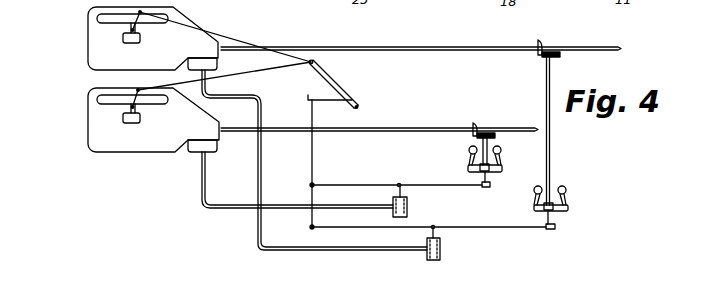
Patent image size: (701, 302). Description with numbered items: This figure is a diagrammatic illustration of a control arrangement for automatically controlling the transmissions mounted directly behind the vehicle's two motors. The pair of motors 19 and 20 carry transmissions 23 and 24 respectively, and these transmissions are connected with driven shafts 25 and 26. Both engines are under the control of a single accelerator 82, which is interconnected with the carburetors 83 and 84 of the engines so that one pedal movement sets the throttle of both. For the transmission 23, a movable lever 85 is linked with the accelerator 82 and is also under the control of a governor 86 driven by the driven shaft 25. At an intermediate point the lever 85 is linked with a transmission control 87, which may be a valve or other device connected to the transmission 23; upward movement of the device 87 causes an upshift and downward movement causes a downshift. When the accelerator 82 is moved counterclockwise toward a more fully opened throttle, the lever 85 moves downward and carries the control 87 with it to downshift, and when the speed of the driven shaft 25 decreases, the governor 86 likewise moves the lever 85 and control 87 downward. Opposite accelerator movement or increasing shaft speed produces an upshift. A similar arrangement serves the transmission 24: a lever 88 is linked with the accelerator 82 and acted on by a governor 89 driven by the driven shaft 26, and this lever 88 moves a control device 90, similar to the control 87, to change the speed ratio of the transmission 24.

The motor 19 is at (94, 121).
The motor 20 is at (94, 38).
The transmission 23 is at (216, 141).
The transmission 24 is at (218, 56).
The driven shaft 25 is at (418, 128).
The driven shaft 26 is at (425, 52).
The accelerator 82 is at (323, 73).
The carburetor 83 is at (134, 124).
The carburetor 84 is at (134, 44).
The movable lever 85 is at (356, 184).
The governor 86 is at (505, 153).
The transmission control 87 is at (408, 203).
The lever 88 is at (478, 228).
The governor 89 is at (571, 197).
The control device 90 is at (441, 250).